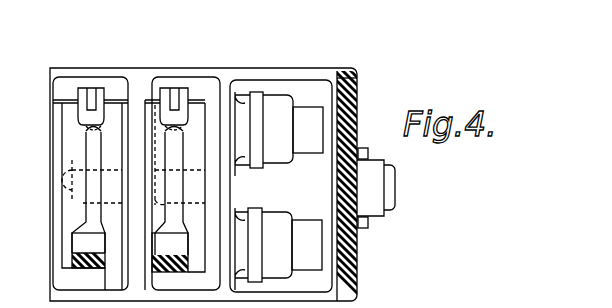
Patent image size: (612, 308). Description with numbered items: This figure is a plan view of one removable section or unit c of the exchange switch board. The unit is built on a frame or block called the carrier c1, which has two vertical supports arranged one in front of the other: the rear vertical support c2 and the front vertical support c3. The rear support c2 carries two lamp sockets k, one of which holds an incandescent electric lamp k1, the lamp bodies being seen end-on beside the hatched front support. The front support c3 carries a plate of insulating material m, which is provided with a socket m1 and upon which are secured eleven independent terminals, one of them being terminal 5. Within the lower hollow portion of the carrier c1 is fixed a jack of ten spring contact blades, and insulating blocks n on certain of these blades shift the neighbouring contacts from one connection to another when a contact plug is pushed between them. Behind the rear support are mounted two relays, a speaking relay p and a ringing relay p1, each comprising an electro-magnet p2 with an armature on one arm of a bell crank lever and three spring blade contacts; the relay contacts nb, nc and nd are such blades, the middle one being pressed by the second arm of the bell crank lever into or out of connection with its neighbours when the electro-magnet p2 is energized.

The speaking relay p is at (135, 62).
The ringing relay p1 is at (130, 193).
The electro-magnet p2 is at (145, 265).
The terminal 5 is at (169, 88).
The insulating block n is at (88, 241).
The relay contact nb is at (172, 254).
The relay contact nc is at (85, 130).
The relay contact nd is at (184, 129).
The removable section or unit c is at (364, 226).
The carrier c1 is at (320, 69).
The rear vertical support c2 is at (232, 189).
The front vertical support c3 is at (360, 96).
The plate of insulating material m is at (363, 119).
The socket m1 is at (372, 184).
The lamp socket k is at (256, 250).
The incandescent electric lamp k1 is at (263, 132).